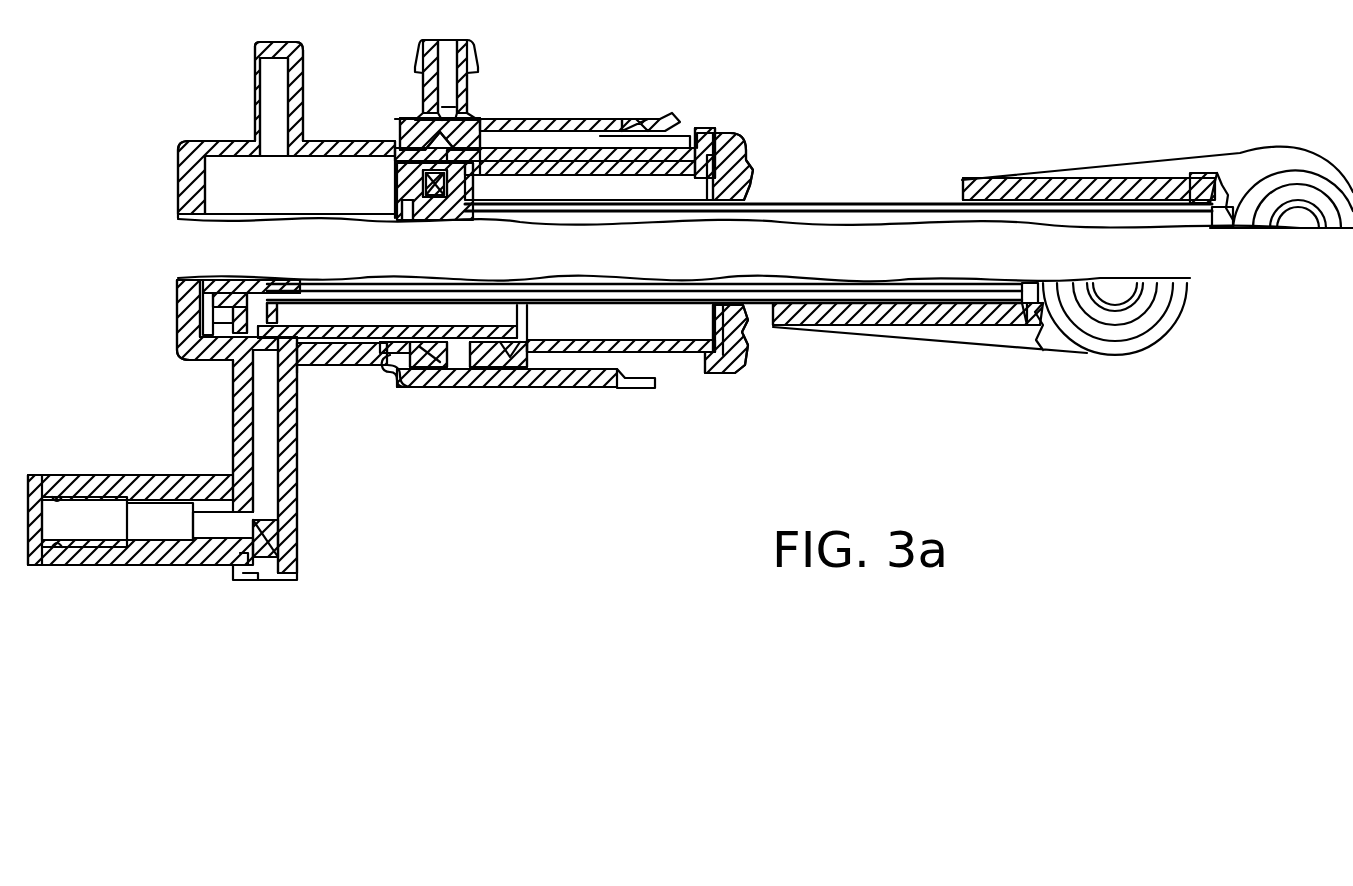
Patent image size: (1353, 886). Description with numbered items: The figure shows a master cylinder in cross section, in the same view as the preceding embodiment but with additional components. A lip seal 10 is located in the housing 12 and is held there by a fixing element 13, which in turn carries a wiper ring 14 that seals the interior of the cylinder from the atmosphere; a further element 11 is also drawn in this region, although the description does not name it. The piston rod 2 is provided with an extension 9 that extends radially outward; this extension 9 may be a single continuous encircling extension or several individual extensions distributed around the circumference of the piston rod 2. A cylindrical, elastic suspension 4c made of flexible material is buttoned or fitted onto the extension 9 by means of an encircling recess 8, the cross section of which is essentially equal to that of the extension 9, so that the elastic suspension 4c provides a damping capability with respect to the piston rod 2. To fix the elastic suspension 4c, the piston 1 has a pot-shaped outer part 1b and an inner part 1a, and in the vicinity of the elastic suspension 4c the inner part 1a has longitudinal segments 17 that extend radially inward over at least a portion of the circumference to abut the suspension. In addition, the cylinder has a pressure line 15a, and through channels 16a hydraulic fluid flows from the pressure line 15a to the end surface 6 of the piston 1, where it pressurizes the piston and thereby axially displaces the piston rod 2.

The piston 1 is at (690, 152).
The inner part 1a is at (372, 340).
The pot-shaped outer part 1b is at (322, 350).
The piston rod 2 is at (857, 210).
The elastic suspension 4c is at (452, 148).
The end surface 6 is at (395, 185).
The recess 8 is at (430, 172).
The extension 9 is at (462, 162).
The lip seal 10 is at (535, 124).
The lower sleeve 11 is at (560, 378).
The housing 12 is at (442, 372).
The fixing element 13 is at (636, 130).
The wiper ring 14 is at (750, 172).
The pressure line 15a is at (267, 508).
The channels 16a is at (345, 360).
The longitudinal segments 17 is at (235, 378).